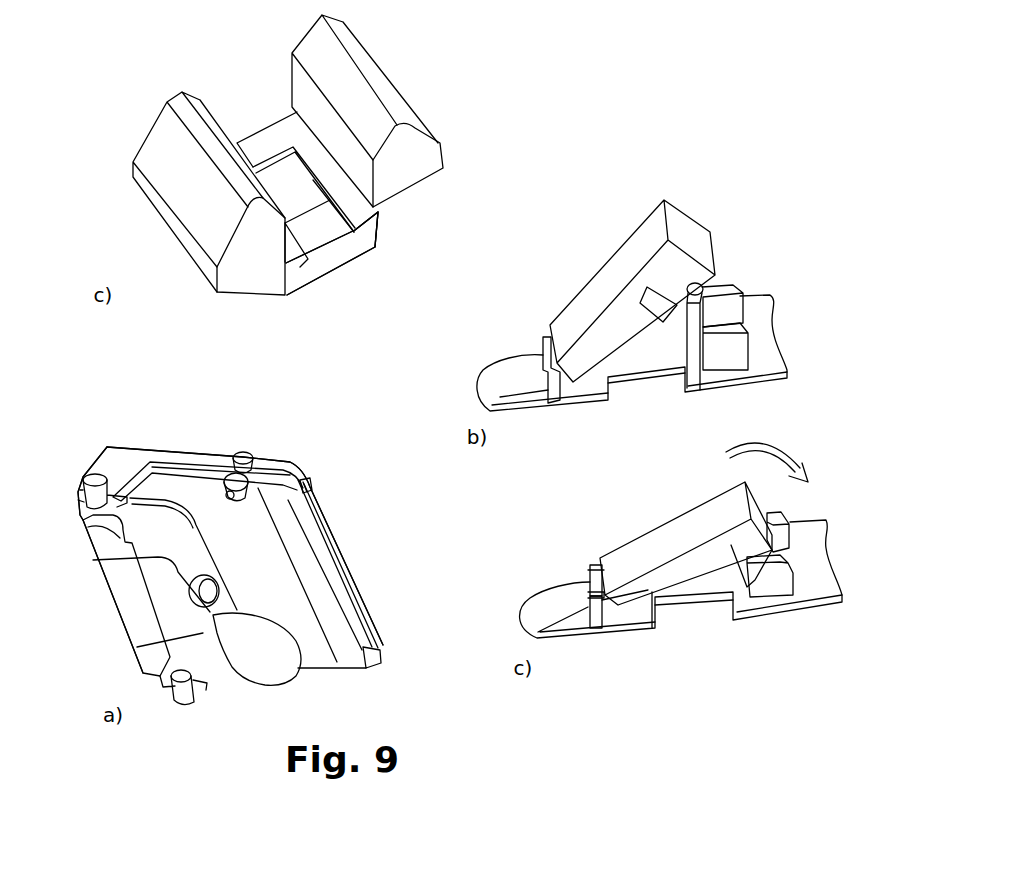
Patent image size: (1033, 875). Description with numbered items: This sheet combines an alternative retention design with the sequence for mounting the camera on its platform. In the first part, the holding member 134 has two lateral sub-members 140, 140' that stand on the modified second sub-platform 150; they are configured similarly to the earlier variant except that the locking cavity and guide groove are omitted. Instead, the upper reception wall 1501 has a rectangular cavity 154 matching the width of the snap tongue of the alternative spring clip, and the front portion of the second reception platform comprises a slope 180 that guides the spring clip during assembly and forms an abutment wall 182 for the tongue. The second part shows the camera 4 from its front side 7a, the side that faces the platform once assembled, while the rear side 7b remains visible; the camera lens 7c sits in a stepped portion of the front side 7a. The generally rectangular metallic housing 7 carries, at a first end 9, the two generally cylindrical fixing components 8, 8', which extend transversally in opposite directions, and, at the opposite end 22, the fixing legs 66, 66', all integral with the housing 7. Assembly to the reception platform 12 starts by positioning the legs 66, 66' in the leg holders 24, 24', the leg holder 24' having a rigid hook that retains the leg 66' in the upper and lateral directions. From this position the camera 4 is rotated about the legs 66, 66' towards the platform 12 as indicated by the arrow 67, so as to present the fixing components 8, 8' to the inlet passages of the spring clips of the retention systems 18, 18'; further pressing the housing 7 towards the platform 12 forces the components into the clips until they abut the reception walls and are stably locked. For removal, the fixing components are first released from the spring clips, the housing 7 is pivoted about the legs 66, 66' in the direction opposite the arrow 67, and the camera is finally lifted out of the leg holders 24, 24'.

In FIG. 8, the holding member 134 is at (156, 249).
In FIG. 8, the lateral sub-member 140 is at (209, 213).
In FIG. 8, the lateral sub-member 140' is at (412, 111).
In FIG. 8, the second sub-platform 150 is at (352, 248).
In FIG. 8, the upper reception wall 1501 is at (355, 198).
In FIG. 8, the rectangular cavity 154 is at (281, 172).
In FIG. 8, the slope 180 is at (316, 242).
In FIG. 8, the abutment wall 182 is at (312, 208).
In FIG. 9, the camera 4 is at (334, 508).
In FIG. 9, the housing 7 is at (262, 548).
In FIG. 9, the front side 7a is at (268, 599).
In FIG. 9, the rear side 7b is at (642, 562).
In FIG. 9, the camera lens 7c is at (205, 595).
In FIG. 9, the fixing component 8 is at (442, 519).
In FIG. 9, the fixing component 8' is at (97, 460).
In FIG. 9, the first end 9 is at (122, 583).
In FIG. 9, the reception platform 12 is at (575, 390).
In FIG. 9, the retention system 18 is at (784, 478).
In FIG. 9, the retention system 18' is at (789, 398).
In FIG. 9, the opposite end 22 is at (327, 572).
In FIG. 9, the leg holder 24 is at (611, 637).
In FIG. 9, the leg holder 24' is at (584, 546).
In FIG. 9, the leg 66 is at (464, 502).
In FIG. 9, the leg 66' is at (277, 461).
In FIG. 9, the arrow 67 is at (795, 440).